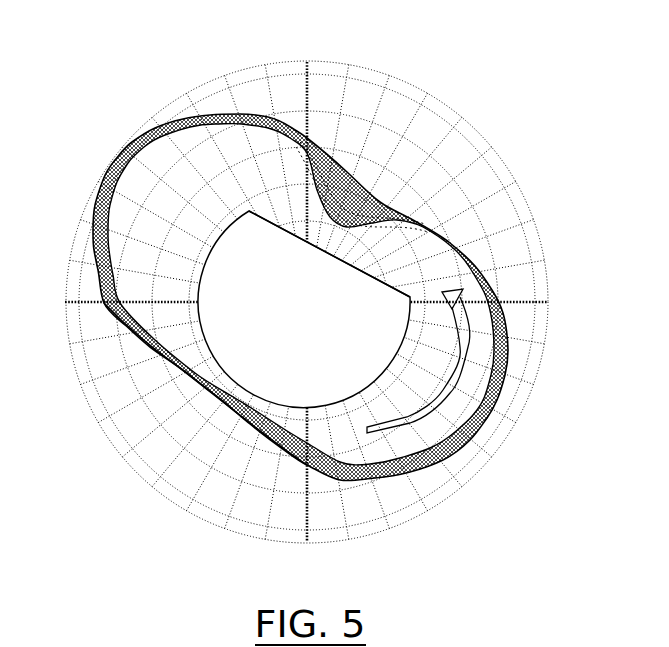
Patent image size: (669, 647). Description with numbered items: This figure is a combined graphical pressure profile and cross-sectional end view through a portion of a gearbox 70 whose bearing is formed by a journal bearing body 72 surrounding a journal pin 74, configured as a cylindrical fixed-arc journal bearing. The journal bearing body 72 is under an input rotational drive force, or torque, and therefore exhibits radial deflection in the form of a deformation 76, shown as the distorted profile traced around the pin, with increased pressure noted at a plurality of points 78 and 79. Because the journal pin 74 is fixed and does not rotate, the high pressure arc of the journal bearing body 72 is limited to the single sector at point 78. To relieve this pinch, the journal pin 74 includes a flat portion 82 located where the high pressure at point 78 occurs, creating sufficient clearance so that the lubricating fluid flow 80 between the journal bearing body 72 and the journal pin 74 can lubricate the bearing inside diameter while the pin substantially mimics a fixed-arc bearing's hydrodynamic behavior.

The gearbox 70 is at (517, 55).
The journal bearing body 72 is at (502, 292).
The journal pin 74 is at (271, 325).
The deformation 76 is at (375, 163).
The high pressure point 78 is at (381, 202).
The pressure point 79 is at (272, 432).
The lubricating fluid flow 80 is at (405, 430).
The flat portion 82 is at (360, 270).